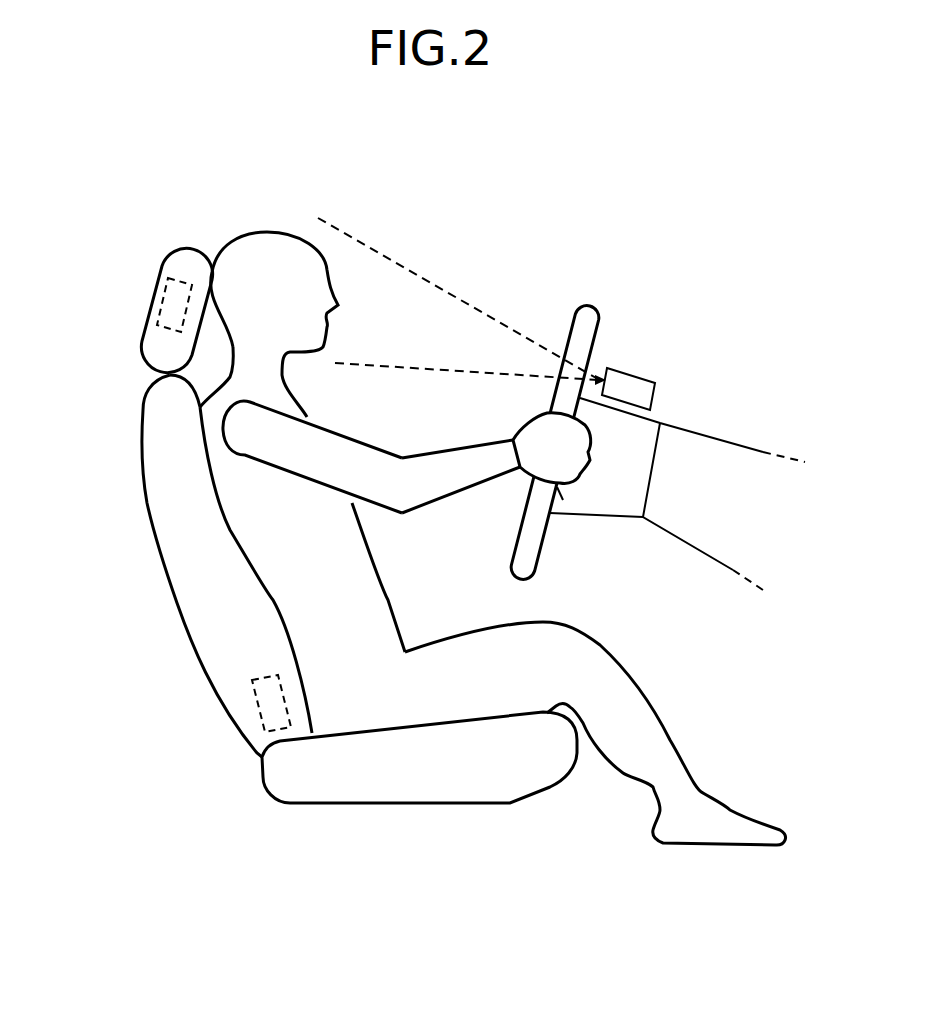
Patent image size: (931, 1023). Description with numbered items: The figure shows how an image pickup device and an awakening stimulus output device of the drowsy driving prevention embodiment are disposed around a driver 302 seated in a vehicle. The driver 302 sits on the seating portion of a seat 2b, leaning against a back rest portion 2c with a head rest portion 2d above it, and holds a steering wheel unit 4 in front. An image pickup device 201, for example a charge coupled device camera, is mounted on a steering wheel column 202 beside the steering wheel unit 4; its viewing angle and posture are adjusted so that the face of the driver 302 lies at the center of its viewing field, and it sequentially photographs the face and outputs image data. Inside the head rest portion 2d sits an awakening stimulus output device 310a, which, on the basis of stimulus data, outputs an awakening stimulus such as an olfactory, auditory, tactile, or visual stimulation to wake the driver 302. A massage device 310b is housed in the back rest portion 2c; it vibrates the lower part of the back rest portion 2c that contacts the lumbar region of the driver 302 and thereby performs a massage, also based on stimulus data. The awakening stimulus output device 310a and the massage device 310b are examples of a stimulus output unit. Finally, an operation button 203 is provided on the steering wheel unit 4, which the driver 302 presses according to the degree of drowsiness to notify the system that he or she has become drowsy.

The seating portion of seat 2b is at (262, 772).
The back rest portion 2c is at (170, 585).
The head rest portion 2d is at (188, 248).
The steering wheel unit 4 is at (587, 307).
The image pickup device 201 is at (630, 372).
The steering wheel column 202 is at (657, 422).
The operation button 203 is at (567, 493).
The driver 302 is at (267, 232).
The awakening stimulus output device 310a is at (163, 300).
The massage device 310b is at (258, 710).